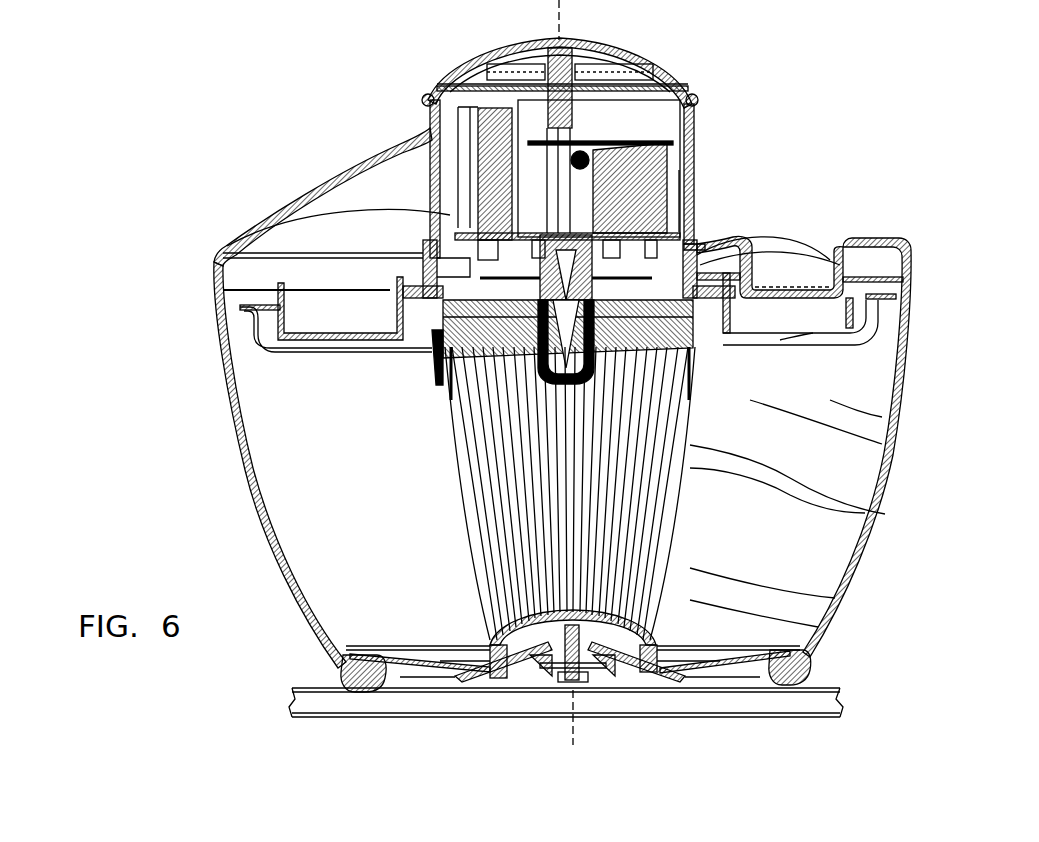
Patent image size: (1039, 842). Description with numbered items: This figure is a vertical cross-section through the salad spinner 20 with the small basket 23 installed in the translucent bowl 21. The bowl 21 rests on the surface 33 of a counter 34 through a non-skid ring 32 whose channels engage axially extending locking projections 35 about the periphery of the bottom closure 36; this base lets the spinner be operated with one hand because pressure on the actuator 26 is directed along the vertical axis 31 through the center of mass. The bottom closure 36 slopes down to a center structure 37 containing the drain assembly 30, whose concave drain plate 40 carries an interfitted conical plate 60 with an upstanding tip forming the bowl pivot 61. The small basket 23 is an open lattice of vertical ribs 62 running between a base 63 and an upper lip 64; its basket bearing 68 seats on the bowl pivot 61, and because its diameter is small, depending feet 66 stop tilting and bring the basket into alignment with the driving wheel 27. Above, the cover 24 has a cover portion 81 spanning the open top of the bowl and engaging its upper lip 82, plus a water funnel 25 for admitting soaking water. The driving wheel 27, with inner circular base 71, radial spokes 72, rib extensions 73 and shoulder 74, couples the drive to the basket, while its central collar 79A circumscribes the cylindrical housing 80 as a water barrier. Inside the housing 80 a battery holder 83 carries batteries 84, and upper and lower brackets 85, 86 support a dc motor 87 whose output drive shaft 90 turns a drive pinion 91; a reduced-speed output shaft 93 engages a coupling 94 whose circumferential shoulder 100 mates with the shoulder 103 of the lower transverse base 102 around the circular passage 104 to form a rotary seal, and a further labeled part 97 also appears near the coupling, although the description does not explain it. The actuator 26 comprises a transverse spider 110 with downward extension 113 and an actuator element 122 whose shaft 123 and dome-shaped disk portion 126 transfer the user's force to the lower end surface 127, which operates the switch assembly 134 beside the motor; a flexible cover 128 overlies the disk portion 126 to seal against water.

The salad spinner 20 is at (924, 362).
The translucent bowl 21 is at (893, 477).
The small basket 23 is at (858, 555).
The cover 24 is at (918, 241).
The water funnel 25 is at (808, 270).
The actuator 26 is at (706, 67).
The driving wheel 27 is at (890, 307).
The drain assembly 30 is at (584, 698).
The vertical axis 31 is at (558, 14).
The non-skid ring 32 is at (784, 690).
The surface 33 is at (308, 692).
The counter 34 is at (289, 702).
The locking projections 35 is at (806, 673).
The bottom closure 36 is at (723, 657).
The center structure 37 is at (678, 652).
The drain plate 40 is at (614, 676).
The conical plate 60 is at (503, 673).
The bowl pivot 61 is at (450, 612).
The vertical ribs 62 is at (692, 498).
The base 63 is at (818, 627).
The upper lip 64 is at (690, 420).
The feet 66 is at (447, 672).
The basket bearing 68 is at (835, 598).
The inner circular base 71 is at (442, 428).
The radial spokes 72 is at (813, 333).
The rib extension 73 is at (890, 341).
The shoulder 74 is at (897, 294).
The central collar 79A is at (814, 262).
The cylindrical housing 80 is at (697, 122).
The cover portion 81 is at (705, 245).
The upper lip 82 is at (896, 283).
The battery holder 83 is at (426, 112).
The batteries 84 is at (433, 150).
The upper bracket 85 is at (692, 100).
The lower bracket 86 is at (694, 225).
The dc motor 87 is at (697, 130).
The output drive shaft 90 is at (703, 232).
The drive pinion 91 is at (707, 246).
The output shaft 93 is at (730, 252).
The coupling 94 is at (437, 388).
The bracket 97 is at (430, 348).
The circumferential shoulder 100 is at (262, 336).
The lower transverse base 102 is at (240, 307).
The shoulder 103 is at (437, 347).
The circular passage 104 is at (233, 236).
The transverse spider 110 is at (700, 68).
The downward extension 113 is at (223, 264).
The actuator element 122 is at (492, 64).
The shaft 123 is at (600, 52).
The dome-shaped transverse disk portion 126 is at (505, 42).
The lower end surface 127 is at (442, 80).
The flexible cover 128 is at (574, 50).
The switch assembly 134 is at (477, 158).